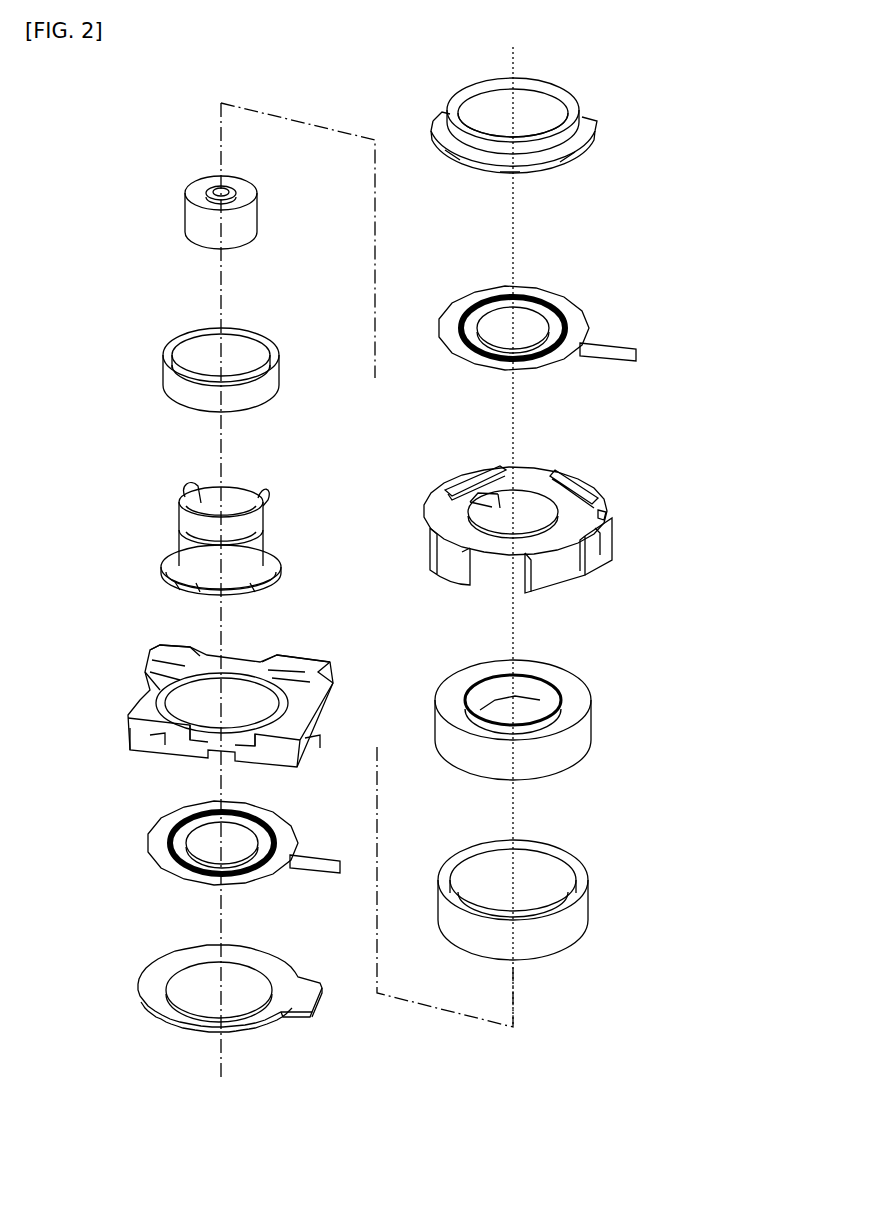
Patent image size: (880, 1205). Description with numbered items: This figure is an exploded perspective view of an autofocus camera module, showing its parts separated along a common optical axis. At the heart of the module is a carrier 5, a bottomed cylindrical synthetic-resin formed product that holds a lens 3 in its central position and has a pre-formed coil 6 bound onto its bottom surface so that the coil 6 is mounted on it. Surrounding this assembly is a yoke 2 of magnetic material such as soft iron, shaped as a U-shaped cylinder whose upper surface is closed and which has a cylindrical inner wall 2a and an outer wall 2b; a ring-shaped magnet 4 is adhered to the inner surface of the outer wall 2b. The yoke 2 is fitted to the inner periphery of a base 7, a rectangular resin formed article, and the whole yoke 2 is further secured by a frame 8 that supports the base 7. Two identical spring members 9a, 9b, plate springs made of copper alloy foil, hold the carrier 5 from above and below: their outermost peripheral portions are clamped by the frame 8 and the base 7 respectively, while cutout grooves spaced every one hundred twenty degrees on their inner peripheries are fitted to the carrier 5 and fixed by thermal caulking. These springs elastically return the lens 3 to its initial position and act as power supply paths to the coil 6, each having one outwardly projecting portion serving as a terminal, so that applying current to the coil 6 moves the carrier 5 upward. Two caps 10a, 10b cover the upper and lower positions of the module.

The yoke 2 is at (577, 690).
The inner wall 2a is at (543, 668).
The outer wall 2b is at (580, 742).
The lens 3 is at (201, 228).
The magnet 4 is at (577, 917).
The carrier 5 is at (180, 535).
The coil 6 is at (165, 385).
The base 7 is at (150, 690).
The frame 8 is at (572, 500).
The spring member 9a is at (587, 322).
The spring member 9b is at (150, 842).
The cap 10a is at (600, 125).
The cap 10b is at (150, 982).